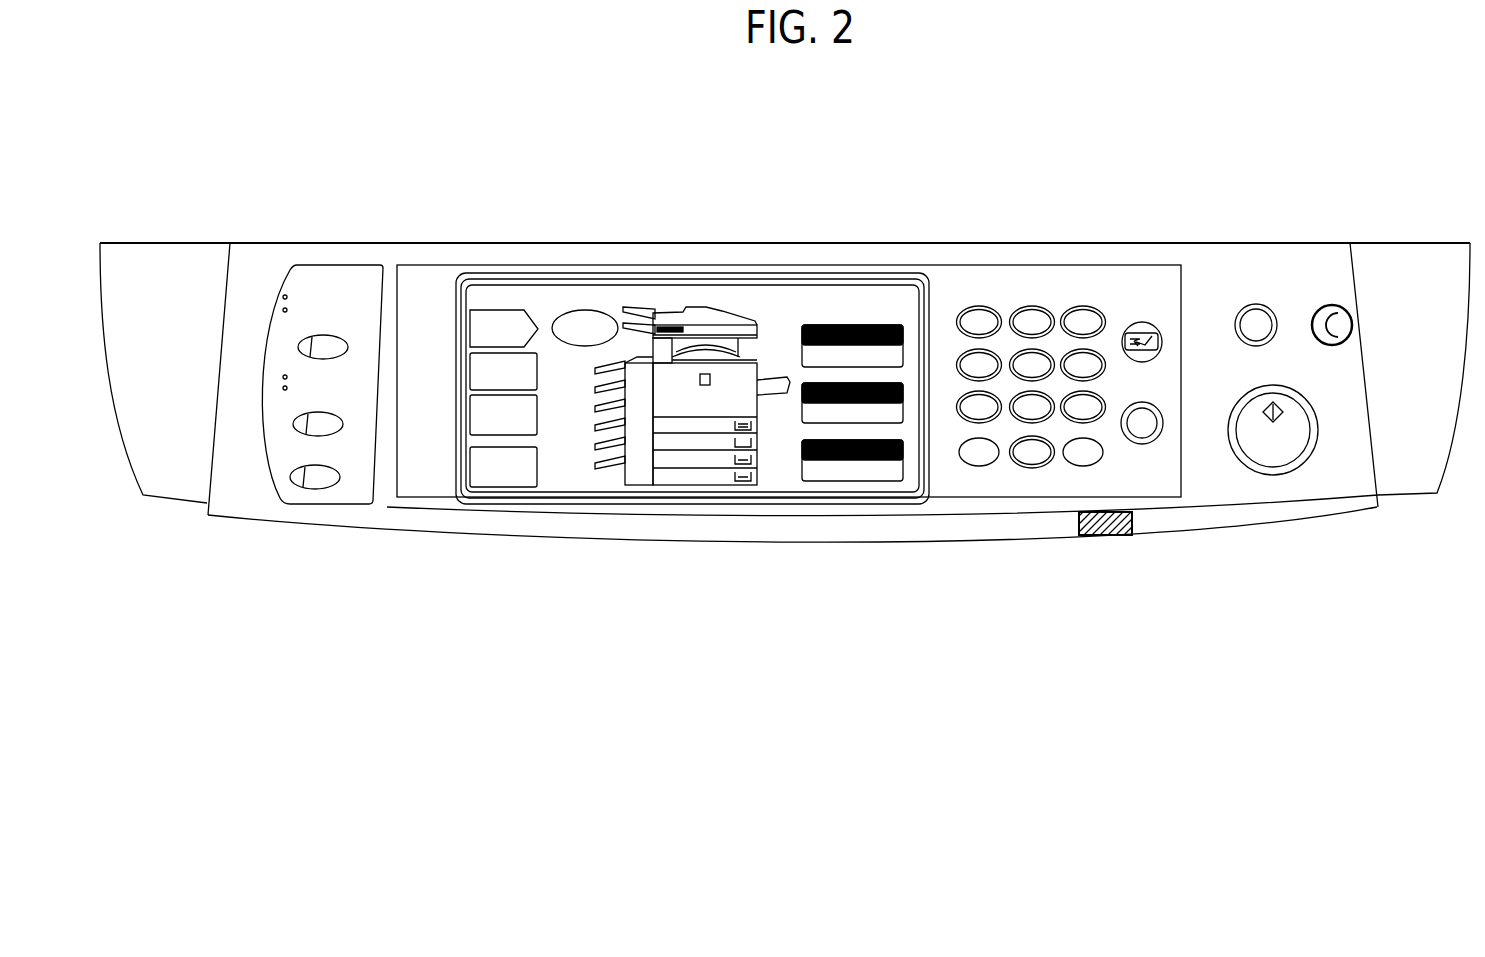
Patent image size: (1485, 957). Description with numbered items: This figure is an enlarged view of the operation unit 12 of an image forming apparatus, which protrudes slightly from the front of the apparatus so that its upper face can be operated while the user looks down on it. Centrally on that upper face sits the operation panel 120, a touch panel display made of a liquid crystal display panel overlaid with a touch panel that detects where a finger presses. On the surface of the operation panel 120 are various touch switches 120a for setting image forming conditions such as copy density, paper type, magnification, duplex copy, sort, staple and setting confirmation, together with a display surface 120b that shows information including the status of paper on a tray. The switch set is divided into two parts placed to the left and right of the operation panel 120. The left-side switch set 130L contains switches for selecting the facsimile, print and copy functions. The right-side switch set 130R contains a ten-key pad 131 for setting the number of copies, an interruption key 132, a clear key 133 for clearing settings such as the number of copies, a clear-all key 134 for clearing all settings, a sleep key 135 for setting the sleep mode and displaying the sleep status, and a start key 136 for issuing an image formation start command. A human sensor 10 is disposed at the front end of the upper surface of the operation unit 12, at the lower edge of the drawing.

The human sensor 10 is at (1080, 535).
The operation unit 12 is at (522, 180).
The operation panel 120 is at (748, 295).
The touch switches 120a is at (858, 305).
The display surface 120b is at (652, 298).
The switch set 130L is at (383, 235).
The switch set 130R is at (1350, 196).
The ten-key pad 131 is at (1043, 318).
The interruption key 132 is at (1163, 340).
The clear key 133 is at (1147, 445).
The clear-all key 134 is at (1278, 317).
The sleep key 135 is at (1352, 318).
The start key 136 is at (1290, 465).